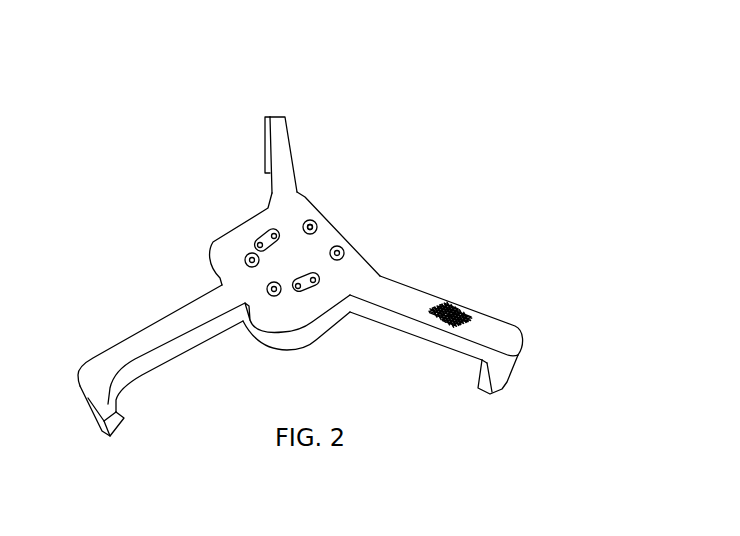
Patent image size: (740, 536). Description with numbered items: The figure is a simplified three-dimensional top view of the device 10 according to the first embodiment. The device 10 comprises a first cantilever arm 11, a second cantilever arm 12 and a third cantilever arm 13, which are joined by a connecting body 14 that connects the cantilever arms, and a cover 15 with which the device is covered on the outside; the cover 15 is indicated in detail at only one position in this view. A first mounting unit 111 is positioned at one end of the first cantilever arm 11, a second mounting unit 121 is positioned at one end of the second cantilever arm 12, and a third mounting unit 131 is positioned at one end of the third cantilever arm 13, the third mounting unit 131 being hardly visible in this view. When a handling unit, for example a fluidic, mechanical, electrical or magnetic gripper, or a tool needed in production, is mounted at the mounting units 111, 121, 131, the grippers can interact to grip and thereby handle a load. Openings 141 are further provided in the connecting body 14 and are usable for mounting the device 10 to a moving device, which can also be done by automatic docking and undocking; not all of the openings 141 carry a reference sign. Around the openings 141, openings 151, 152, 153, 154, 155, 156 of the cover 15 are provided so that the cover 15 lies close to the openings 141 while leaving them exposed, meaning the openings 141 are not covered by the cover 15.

The device 10 is at (475, 97).
The first cantilever arm 11 is at (102, 355).
The first mounting unit 111 is at (101, 434).
The second cantilever arm 12 is at (518, 329).
The second mounting unit 121 is at (505, 390).
The third cantilever arm 13 is at (287, 127).
The third mounting unit 131 is at (263, 167).
The connecting body 14 is at (352, 233).
The openings 141 is at (314, 221).
The cover 15 is at (474, 304).
The opening of the cover 151 is at (317, 224).
The opening of the cover 152 is at (344, 250).
The opening of the cover 153 is at (271, 295).
The opening of the cover 154 is at (244, 262).
The opening of the cover 155 is at (317, 284).
The opening of the cover 156 is at (257, 237).